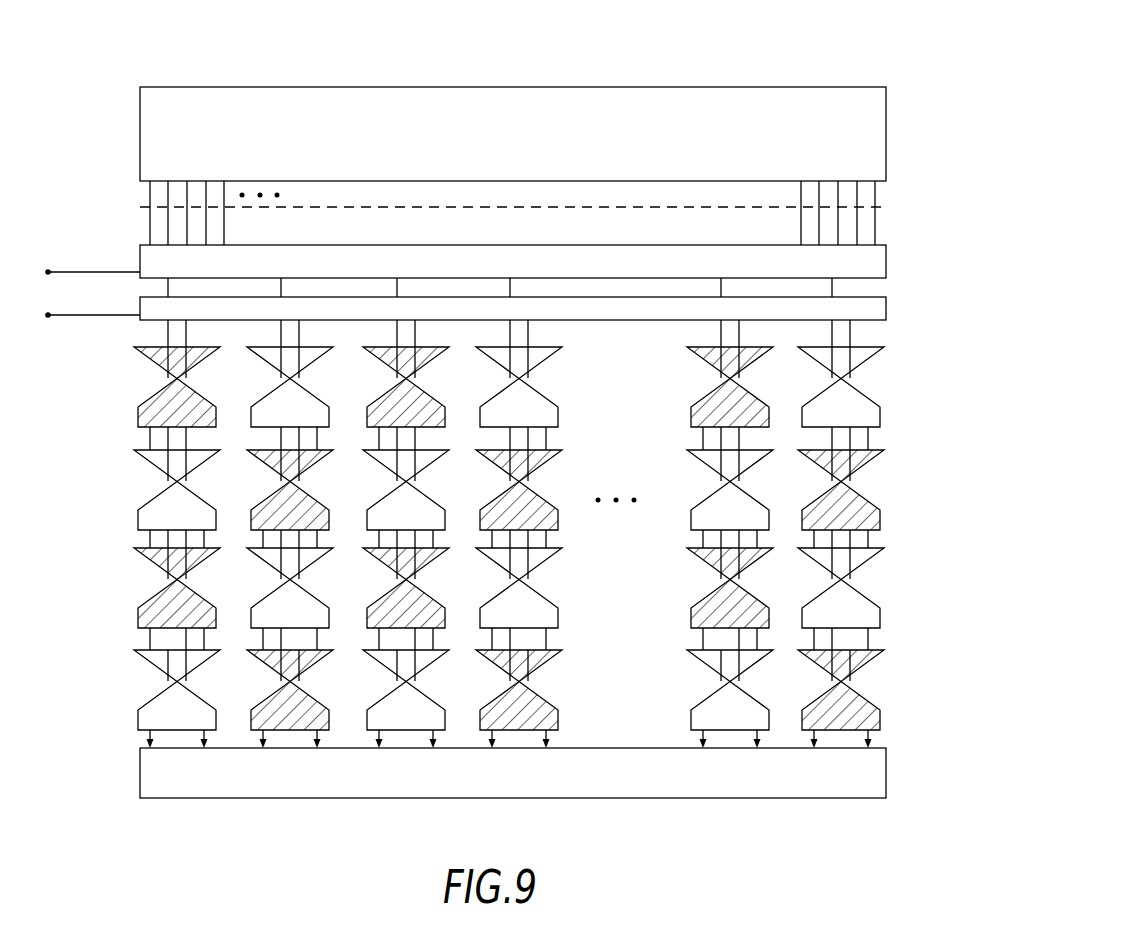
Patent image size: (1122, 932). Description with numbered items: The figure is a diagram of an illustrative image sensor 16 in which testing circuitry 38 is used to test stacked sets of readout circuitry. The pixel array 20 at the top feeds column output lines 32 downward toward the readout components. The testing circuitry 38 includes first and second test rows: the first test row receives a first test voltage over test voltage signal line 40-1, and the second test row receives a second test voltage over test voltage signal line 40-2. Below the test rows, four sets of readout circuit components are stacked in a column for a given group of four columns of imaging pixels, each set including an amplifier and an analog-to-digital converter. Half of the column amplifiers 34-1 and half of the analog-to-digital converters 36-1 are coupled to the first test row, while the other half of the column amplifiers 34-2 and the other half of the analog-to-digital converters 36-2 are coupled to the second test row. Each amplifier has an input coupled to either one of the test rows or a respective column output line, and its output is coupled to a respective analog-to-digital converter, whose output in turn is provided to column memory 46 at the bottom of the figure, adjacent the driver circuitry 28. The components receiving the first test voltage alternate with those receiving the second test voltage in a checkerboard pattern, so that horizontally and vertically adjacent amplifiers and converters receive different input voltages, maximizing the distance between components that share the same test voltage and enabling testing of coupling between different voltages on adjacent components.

The display 16 is at (845, 73).
The pixel array 20 is at (772, 106).
The data lines 32 is at (225, 222).
The testing circuitry 38 is at (895, 320).
The test voltage signal line 40-1 is at (122, 270).
The test voltage signal line 40-2 is at (121, 316).
The column amplifiers 34-1 is at (146, 355).
The column amplifiers 34-2 is at (143, 457).
The analog-to-digital converters 36-1 is at (139, 414).
The analog-to-digital converters 36-2 is at (143, 706).
The column memory 46 is at (762, 800).
The display driver circuitry 28 is at (888, 780).